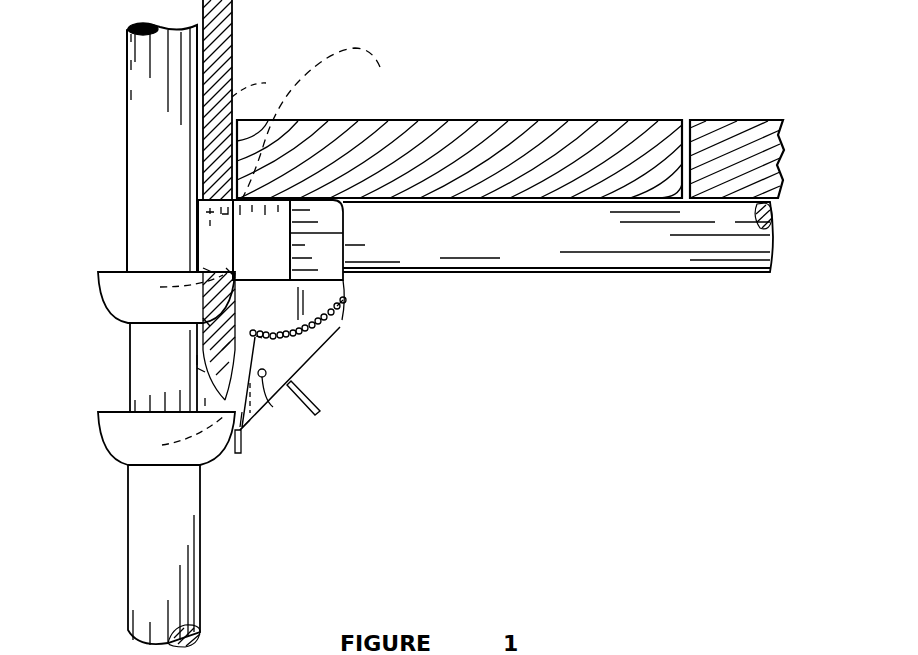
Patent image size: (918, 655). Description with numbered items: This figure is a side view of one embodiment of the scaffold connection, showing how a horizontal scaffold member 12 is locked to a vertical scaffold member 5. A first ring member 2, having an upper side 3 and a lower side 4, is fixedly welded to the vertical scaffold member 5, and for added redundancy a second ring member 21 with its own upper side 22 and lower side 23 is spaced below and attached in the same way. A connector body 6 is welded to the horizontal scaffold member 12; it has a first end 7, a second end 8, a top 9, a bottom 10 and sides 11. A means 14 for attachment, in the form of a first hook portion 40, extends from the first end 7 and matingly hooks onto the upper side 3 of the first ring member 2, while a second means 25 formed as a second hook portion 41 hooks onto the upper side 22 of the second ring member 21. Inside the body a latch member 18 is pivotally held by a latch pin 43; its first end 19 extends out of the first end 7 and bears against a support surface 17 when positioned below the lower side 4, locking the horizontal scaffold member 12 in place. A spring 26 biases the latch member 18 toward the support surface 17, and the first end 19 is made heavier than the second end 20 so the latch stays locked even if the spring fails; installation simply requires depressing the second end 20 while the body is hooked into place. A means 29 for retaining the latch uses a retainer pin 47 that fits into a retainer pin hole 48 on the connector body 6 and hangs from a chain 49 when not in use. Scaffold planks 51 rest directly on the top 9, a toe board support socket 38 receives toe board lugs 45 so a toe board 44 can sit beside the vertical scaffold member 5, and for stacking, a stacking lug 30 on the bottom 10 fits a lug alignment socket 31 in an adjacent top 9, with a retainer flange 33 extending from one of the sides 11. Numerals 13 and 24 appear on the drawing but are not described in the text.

The first ring member 2 is at (94, 288).
The upper side 3 is at (124, 248).
The lower side 4 is at (116, 322).
The vertical scaffold member 5 is at (183, 575).
The connector body 6 is at (348, 287).
The first end 7 is at (202, 370).
The second end 8 is at (314, 373).
The top 9 is at (284, 193).
The bottom 10 is at (256, 421).
The sides 11 is at (325, 312).
The horizontal scaffold member 12 is at (660, 272).
The board 13 is at (535, 197).
The means for attachment 14 is at (211, 249).
The support surface 17 is at (200, 360).
The latch member 18 is at (200, 342).
The first end 19 is at (207, 322).
The second end 20 is at (317, 417).
The second ring member 21 is at (92, 431).
The upper side 22 is at (113, 406).
The lower side 23 is at (119, 473).
The pipe portion 24 is at (206, 401).
The means for attachment 25 is at (231, 273).
The spring 26 is at (210, 270).
The means for retaining 29 is at (262, 338).
The stacking lug 30 is at (239, 452).
The lug alignment socket 31 is at (325, 122).
The retainer flange 33 is at (343, 233).
The toe board support socket 38 is at (197, 212).
The first hook portion 40 is at (178, 287).
The second hook portion 41 is at (181, 437).
The latch pin 43 is at (283, 398).
The toe board 44 is at (223, 42).
The toe board lug 45 is at (265, 85).
The retainer pin 47 is at (252, 330).
The retainer pin hole 48 is at (243, 420).
The chain 49 is at (337, 327).
The scaffold plank 51 is at (428, 130).